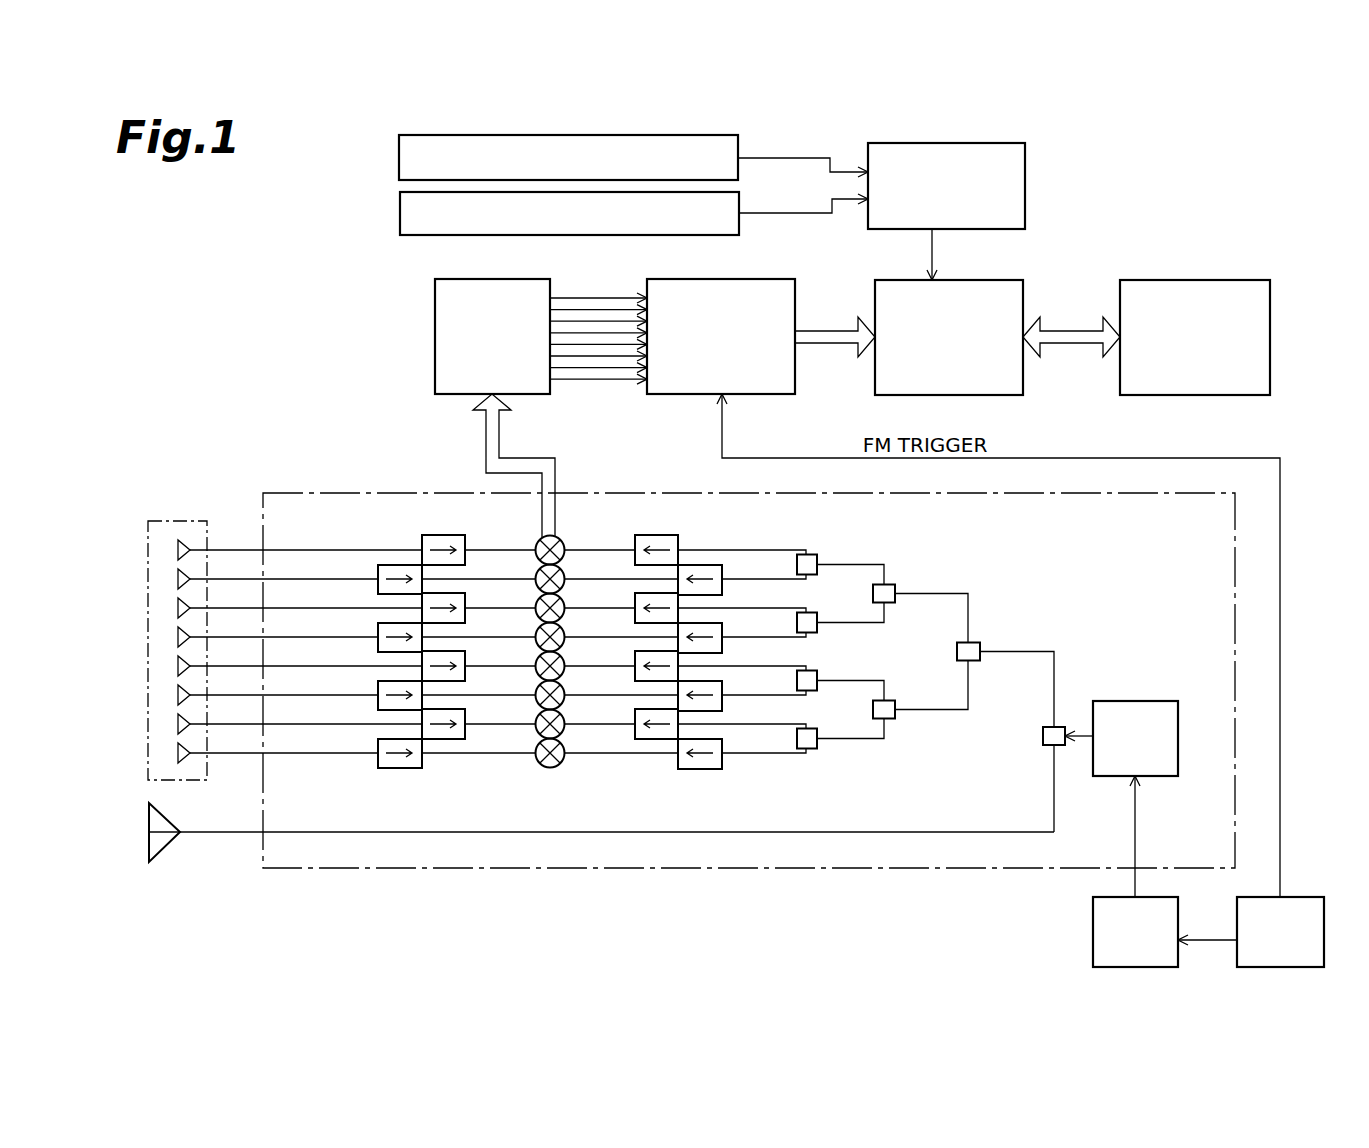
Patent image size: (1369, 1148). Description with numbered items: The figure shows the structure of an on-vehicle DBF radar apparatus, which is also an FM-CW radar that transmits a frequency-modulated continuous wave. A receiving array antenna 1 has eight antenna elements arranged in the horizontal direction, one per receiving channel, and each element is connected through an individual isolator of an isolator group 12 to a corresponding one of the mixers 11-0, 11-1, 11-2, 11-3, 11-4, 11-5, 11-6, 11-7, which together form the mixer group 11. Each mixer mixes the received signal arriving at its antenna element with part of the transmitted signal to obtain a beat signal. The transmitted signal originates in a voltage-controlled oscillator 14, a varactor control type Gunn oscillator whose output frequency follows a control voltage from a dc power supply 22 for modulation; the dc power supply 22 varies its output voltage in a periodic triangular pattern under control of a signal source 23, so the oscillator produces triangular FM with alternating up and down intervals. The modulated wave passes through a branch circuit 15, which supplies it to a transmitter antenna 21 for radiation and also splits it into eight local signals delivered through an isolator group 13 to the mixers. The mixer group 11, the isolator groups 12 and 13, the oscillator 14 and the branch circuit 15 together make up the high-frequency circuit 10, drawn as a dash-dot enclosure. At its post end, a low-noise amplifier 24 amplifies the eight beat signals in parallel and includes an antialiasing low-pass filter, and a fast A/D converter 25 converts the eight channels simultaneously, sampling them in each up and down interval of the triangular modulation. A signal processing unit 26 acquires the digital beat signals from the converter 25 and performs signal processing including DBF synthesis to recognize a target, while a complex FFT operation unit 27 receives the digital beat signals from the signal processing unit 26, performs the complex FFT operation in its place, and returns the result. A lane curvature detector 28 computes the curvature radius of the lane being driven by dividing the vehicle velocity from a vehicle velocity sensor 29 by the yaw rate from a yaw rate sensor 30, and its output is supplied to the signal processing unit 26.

The array antenna 1 is at (165, 521).
The high-frequency circuit 10 is at (355, 492).
The mixer group 11 is at (570, 673).
The mixer 11-0 is at (563, 544).
The mixer 11-1 is at (563, 573).
The mixer 11-2 is at (563, 602).
The mixer 11-3 is at (563, 631).
The mixer 11-4 is at (563, 660).
The mixer 11-5 is at (563, 689).
The mixer 11-6 is at (563, 718).
The mixer 11-7 is at (520, 783).
The isolator group 12 is at (378, 783).
The isolator group 13 is at (635, 783).
The voltage-controlled oscillator 14 is at (1150, 701).
The branch circuit 15 is at (803, 536).
The transmitter antenna 21 is at (170, 848).
The dc power supply 22 is at (1093, 909).
The signal source 23 is at (1300, 897).
The low-noise amplifier 24 is at (500, 279).
The fast A/D converter 25 is at (735, 279).
The signal processing unit 26 is at (975, 280).
The complex FFT operation unit 27 is at (1185, 280).
The lane curvature detector 28 is at (1025, 165).
The vehicle velocity sensor 29 is at (399, 157).
The yaw rate sensor 30 is at (400, 214).